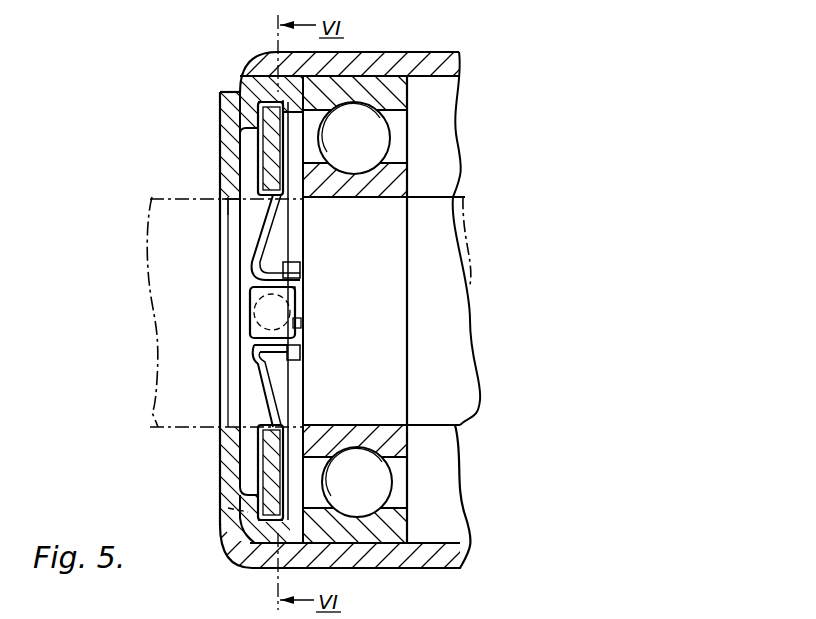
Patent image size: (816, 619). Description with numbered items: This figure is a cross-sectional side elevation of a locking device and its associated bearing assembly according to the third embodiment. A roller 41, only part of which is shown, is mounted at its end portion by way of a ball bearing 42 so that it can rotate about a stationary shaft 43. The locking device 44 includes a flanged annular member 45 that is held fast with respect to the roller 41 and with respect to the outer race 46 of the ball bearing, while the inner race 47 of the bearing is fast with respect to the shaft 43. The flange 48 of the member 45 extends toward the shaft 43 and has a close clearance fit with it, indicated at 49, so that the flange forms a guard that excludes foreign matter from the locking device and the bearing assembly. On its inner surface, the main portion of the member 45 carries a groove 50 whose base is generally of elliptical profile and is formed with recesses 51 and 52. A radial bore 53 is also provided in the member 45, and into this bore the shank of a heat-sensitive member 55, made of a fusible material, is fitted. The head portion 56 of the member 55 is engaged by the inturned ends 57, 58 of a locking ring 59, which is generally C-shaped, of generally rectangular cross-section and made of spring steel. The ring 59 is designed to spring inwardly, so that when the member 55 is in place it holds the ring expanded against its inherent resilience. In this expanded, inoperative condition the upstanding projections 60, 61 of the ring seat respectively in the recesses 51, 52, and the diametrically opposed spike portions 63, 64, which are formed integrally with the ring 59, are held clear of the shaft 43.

The roller 41 is at (415, 64).
The ball bearing 42 is at (396, 143).
The stationary shaft 43 is at (437, 357).
The locking device 44 is at (216, 127).
The flanged annular member 45 is at (253, 87).
The outer race 46 is at (383, 96).
The inner race 47 is at (386, 185).
The flange 48 is at (228, 157).
The close clearance fit 49 is at (233, 200).
The groove 50 is at (257, 127).
The recess 51 is at (285, 99).
The recess 52 is at (268, 516).
The radial bore 53 is at (302, 321).
The heat-sensitive member 55 is at (270, 312).
The head portion 56 is at (293, 298).
The inturned end 57 is at (275, 278).
The inturned end 58 is at (279, 347).
The locking ring 59 is at (263, 238).
The upstanding projection 60 is at (277, 90).
The upstanding projection 61 is at (270, 527).
The spike portion 63 is at (273, 174).
The spike portion 64 is at (269, 433).